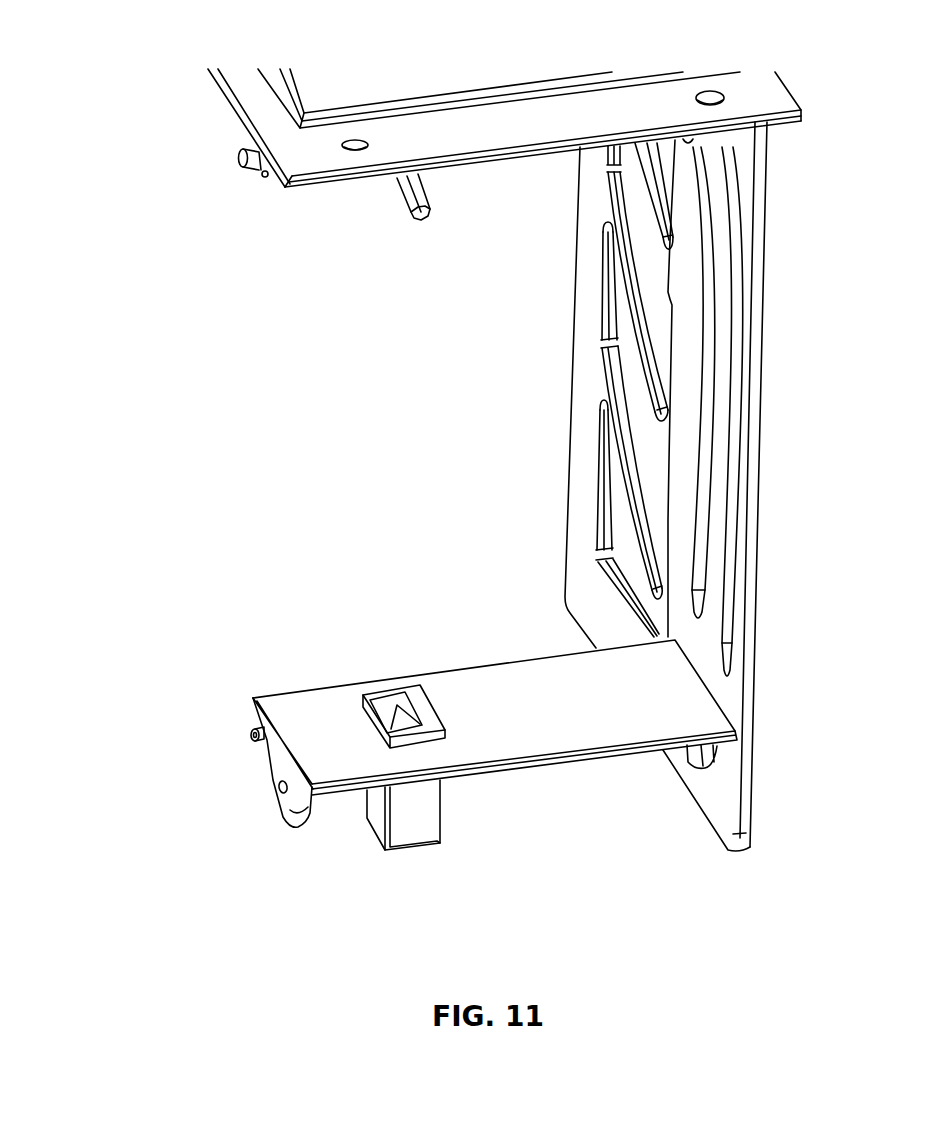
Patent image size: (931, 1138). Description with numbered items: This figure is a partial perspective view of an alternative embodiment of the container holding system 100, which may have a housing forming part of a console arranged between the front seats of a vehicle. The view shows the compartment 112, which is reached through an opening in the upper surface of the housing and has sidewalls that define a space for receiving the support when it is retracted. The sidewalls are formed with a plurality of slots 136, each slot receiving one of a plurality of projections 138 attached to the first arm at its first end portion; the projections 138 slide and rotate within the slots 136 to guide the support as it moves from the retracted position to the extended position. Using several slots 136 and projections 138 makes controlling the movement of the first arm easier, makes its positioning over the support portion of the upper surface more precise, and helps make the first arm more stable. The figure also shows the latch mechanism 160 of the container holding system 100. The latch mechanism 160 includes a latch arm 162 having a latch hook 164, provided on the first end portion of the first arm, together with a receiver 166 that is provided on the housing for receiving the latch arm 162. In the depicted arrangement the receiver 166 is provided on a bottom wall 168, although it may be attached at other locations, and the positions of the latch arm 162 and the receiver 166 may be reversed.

The container holding system 100 is at (120, 592).
The compartment 112 is at (752, 570).
The slots 136 is at (707, 456).
The projection 138 is at (239, 160).
The latch mechanism 160 is at (268, 845).
The latch arm 162 is at (413, 211).
The latch hook 164 is at (416, 229).
The receiver 166 is at (416, 810).
The bottom wall 168 is at (288, 713).